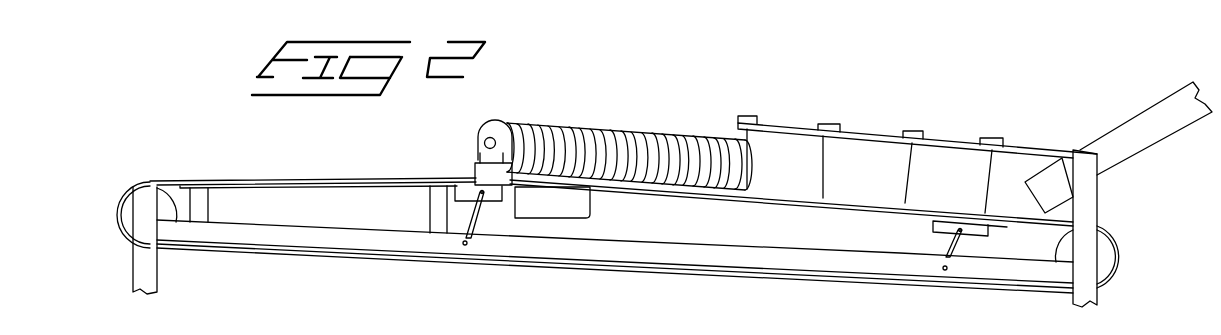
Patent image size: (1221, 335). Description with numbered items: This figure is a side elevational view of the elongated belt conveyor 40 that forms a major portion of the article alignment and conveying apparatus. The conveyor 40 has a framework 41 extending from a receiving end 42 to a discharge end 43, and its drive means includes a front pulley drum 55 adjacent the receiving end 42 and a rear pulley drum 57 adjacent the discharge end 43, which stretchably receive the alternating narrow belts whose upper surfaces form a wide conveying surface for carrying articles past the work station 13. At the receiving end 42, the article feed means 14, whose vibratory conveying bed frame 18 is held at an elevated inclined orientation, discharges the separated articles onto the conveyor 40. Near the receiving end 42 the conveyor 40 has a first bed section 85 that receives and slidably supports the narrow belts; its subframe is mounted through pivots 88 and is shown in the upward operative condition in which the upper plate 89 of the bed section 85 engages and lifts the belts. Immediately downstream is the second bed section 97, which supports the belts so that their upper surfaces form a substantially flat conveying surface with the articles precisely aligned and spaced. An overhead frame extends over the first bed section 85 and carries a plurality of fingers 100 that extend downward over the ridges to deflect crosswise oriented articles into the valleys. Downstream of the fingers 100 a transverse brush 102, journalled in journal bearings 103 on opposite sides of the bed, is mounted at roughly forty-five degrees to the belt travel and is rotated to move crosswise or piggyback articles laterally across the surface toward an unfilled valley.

The work station 13 is at (300, 165).
The article feed means 14 is at (1203, 83).
The vibratory conveying bed frame 18 is at (1122, 162).
The elongated belt conveyor 40 is at (842, 291).
The framework 41 is at (386, 243).
The receiving end 42 is at (1118, 270).
The discharge end 43 is at (117, 235).
The front pulley drum 55 is at (1100, 253).
The rear pulley drum 57 is at (122, 209).
The first bed section 85 is at (847, 212).
The pivots 88 is at (474, 221).
The upper plate 89 is at (773, 205).
The second bed section 97 is at (335, 188).
The fingers 100 is at (905, 168).
The transverse brush 102 is at (657, 143).
The journal bearings 103 is at (502, 135).